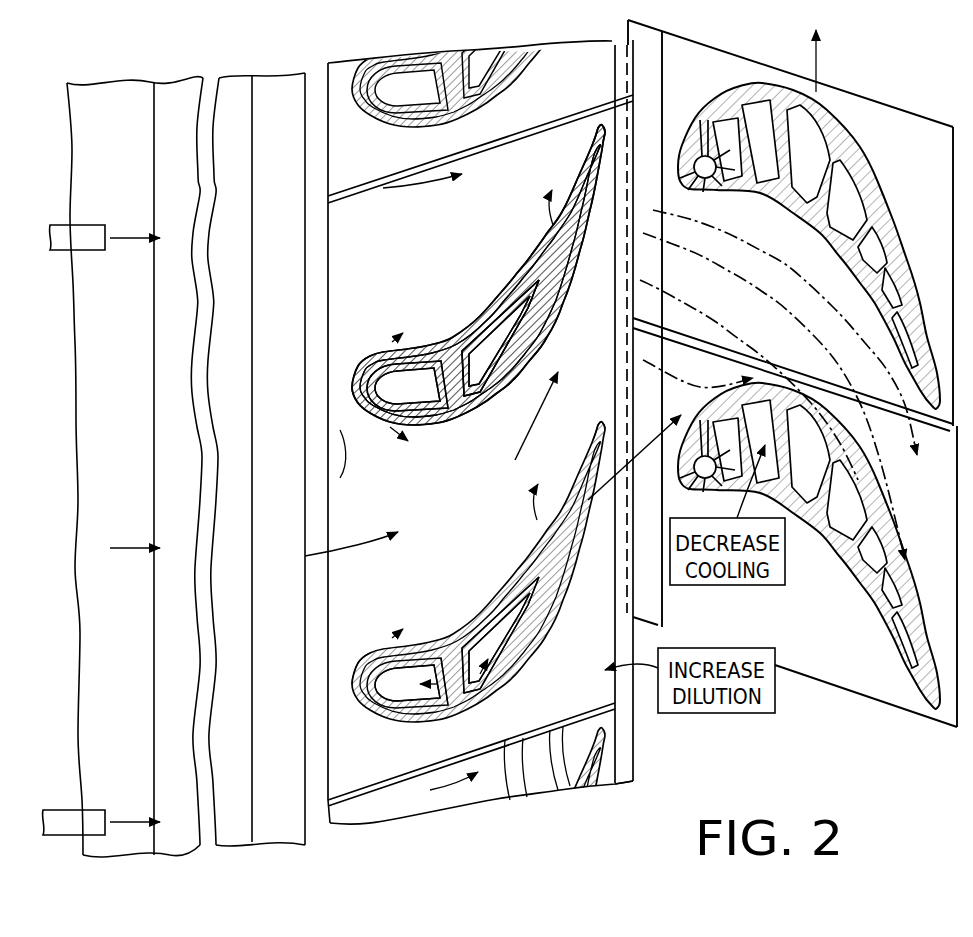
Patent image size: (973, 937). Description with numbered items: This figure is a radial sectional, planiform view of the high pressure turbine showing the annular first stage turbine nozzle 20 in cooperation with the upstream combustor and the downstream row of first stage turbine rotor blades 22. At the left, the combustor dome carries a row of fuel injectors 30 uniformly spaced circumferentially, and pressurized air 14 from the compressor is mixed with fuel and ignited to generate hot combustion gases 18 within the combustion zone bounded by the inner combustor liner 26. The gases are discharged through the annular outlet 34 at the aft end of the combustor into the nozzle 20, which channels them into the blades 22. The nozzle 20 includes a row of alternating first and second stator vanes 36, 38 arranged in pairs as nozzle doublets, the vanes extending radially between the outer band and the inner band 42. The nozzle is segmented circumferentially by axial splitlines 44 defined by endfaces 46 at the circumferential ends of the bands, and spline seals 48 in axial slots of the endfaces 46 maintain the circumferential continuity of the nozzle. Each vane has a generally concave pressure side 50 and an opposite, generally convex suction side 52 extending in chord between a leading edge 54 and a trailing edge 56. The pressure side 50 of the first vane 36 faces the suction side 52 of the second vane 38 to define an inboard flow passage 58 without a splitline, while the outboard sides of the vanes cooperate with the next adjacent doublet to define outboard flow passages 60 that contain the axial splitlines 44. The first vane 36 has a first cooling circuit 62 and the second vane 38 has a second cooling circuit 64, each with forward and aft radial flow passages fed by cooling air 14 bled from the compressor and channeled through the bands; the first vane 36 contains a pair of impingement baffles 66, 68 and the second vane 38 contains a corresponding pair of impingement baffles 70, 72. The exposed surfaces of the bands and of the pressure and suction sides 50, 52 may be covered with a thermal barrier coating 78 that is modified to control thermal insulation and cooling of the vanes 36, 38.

The pressurized air 14 is at (423, 678).
The hot combustion gases 18 is at (140, 549).
The first stage turbine nozzle 20 is at (556, 40).
The first stage turbine rotor blades 22 is at (880, 182).
The inner combustor liner 26 is at (130, 181).
The fuel injectors 30 is at (85, 251).
The annular outlet 34 is at (297, 533).
The first stator vane 36 is at (508, 96).
The second stator vane 38 is at (351, 410).
The inner band 42 is at (327, 233).
The axial splitlines 44 is at (586, 113).
The endfaces 46 is at (508, 780).
The spline seals 48 is at (328, 803).
The pressure side 50 is at (510, 288).
The suction side 52 is at (521, 372).
The leading edge 54 is at (352, 692).
The trailing edge 56 is at (600, 420).
The inboard flow passage 58 is at (469, 528).
The outboard flow passages 60 is at (534, 193).
The first cooling circuit 62 is at (380, 652).
The second cooling circuit 64 is at (378, 358).
The impingement baffle 66 is at (465, 700).
The impingement baffle 68 is at (548, 565).
The impingement baffle 70 is at (455, 424).
The impingement baffle 72 is at (537, 285).
The thermal barrier coating 78 is at (410, 236).